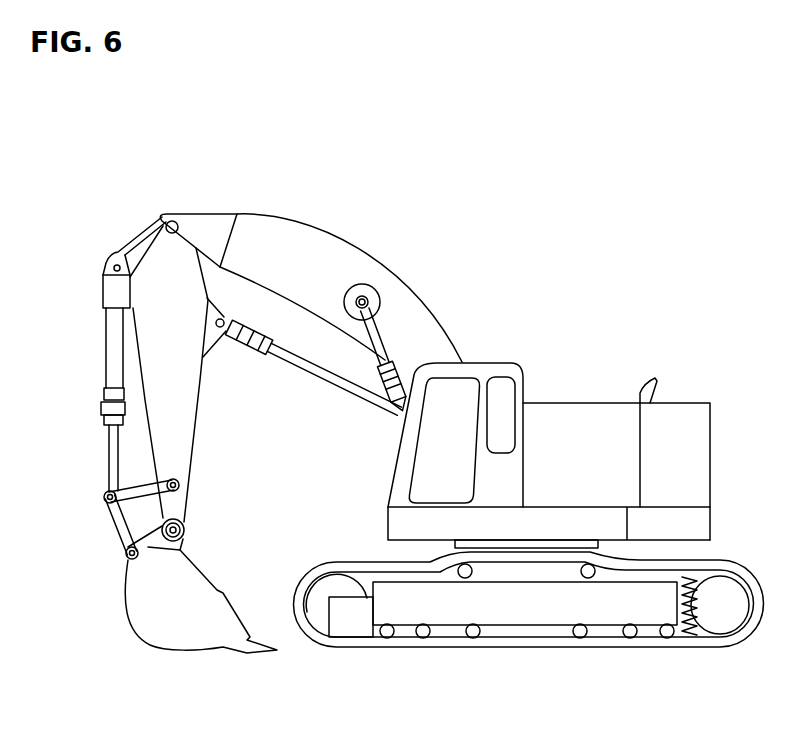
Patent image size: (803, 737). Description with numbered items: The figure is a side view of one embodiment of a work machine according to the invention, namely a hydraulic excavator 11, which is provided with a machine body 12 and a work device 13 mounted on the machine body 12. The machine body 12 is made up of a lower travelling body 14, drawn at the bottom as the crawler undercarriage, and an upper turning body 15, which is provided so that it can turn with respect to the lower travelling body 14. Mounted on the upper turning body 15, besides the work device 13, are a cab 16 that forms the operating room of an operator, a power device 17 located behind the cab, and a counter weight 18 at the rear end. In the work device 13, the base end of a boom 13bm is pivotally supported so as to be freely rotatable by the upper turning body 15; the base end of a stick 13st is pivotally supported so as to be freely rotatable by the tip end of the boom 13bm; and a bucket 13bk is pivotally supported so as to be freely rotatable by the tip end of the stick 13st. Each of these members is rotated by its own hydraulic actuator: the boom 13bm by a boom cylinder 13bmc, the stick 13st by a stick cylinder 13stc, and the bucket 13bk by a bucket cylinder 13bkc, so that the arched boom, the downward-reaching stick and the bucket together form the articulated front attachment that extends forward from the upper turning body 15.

The hydraulic excavator 11 is at (552, 183).
The machine body 12 is at (368, 541).
The work device 13 is at (382, 253).
The boom 13bm is at (302, 230).
The stick 13st is at (201, 399).
The bucket 13bk is at (193, 583).
The boom cylinder 13bmc is at (404, 371).
The stick cylinder 13stc is at (298, 366).
The bucket cylinder 13bkc is at (106, 337).
The lower travelling body 14 is at (407, 629).
The upper turning body 15 is at (388, 543).
The cab 16 is at (500, 363).
The power device 17 is at (572, 403).
The counter weight 18 is at (683, 403).